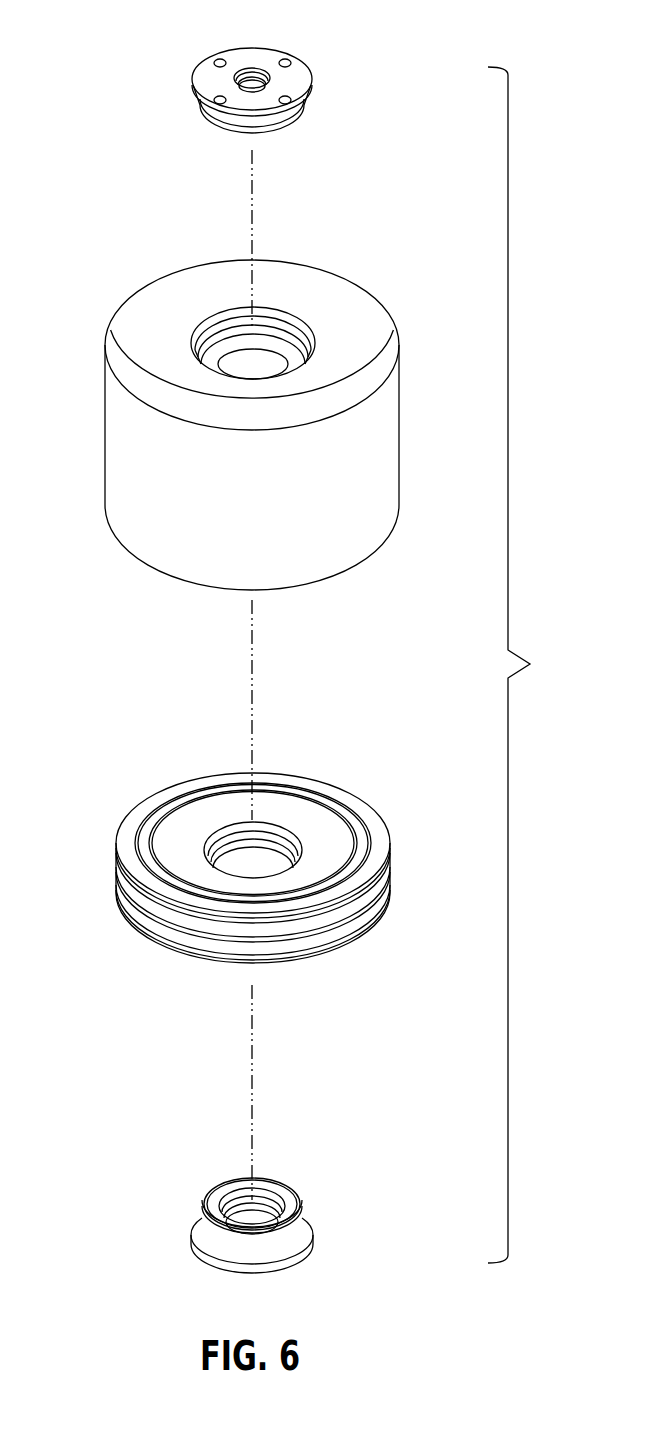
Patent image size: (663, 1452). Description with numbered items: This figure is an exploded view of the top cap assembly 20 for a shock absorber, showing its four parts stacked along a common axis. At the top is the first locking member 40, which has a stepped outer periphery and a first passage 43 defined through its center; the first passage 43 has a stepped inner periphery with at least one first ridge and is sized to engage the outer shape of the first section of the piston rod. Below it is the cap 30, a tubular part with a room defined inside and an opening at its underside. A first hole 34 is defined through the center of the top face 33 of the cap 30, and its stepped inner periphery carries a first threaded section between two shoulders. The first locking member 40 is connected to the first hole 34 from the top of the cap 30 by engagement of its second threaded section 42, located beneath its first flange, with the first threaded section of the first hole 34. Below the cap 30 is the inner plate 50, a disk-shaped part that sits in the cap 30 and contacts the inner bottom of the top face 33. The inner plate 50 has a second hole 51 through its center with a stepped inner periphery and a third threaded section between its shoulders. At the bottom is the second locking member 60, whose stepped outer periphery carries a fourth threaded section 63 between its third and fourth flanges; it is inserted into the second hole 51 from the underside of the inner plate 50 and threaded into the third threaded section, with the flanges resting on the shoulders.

The top cap assembly 20 is at (527, 665).
The cap 30 is at (228, 403).
The top face 33 is at (132, 352).
The first hole 34 is at (262, 365).
The first locking member 40 is at (249, 94).
The second threaded section 42 is at (289, 122).
The first passage 43 is at (250, 72).
The inner plate 50 is at (214, 842).
The second hole 51 is at (255, 865).
The second locking member 60 is at (293, 1210).
The fourth threaded section 63 is at (293, 1237).